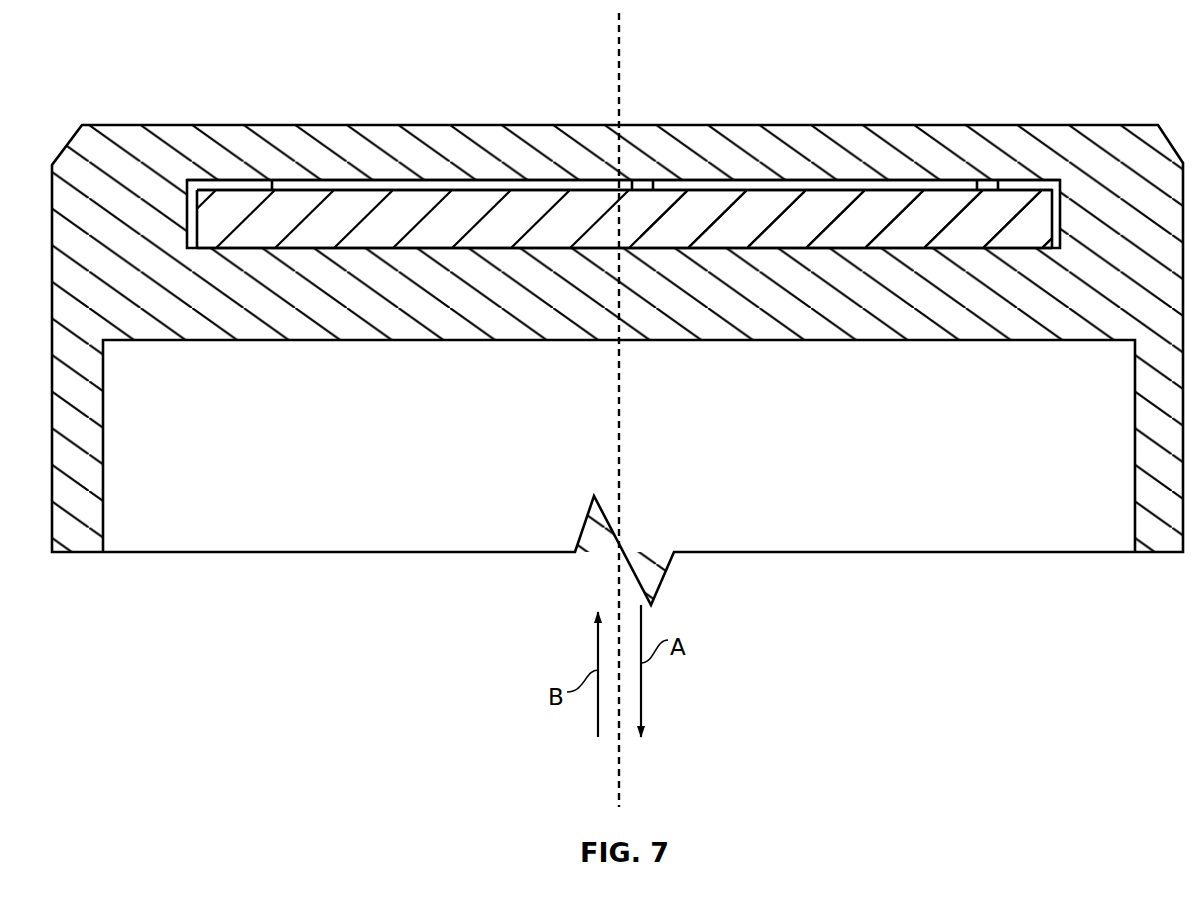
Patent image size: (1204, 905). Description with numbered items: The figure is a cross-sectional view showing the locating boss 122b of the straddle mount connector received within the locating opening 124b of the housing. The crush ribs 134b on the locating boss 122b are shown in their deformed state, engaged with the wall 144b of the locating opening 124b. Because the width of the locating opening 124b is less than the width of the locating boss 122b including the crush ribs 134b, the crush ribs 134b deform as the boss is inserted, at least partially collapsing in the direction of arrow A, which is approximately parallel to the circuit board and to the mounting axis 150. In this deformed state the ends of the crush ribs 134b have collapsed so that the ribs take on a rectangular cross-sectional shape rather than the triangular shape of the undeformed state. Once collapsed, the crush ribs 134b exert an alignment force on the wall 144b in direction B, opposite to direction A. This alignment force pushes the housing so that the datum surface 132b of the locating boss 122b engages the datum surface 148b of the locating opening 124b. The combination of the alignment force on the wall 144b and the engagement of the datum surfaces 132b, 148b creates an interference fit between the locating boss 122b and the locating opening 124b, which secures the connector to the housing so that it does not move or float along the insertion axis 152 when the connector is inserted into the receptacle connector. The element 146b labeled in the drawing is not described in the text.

The mounting axis 150 is at (619, 58).
The insertion axis 152 is at (619, 97).
The crush ribs 134b is at (263, 178).
The seal member 146b is at (358, 243).
The datum surface of the locating opening 148b is at (432, 252).
The wall of the locating opening 144b is at (764, 185).
The locating opening 124b is at (913, 186).
The locating boss 122b is at (860, 240).
The datum surface of the locating boss 132b is at (397, 249).